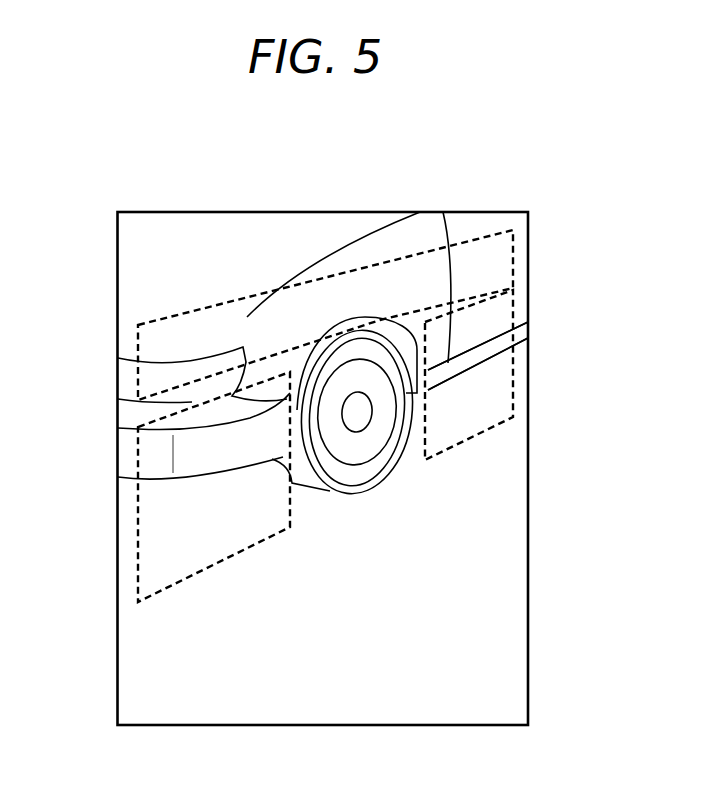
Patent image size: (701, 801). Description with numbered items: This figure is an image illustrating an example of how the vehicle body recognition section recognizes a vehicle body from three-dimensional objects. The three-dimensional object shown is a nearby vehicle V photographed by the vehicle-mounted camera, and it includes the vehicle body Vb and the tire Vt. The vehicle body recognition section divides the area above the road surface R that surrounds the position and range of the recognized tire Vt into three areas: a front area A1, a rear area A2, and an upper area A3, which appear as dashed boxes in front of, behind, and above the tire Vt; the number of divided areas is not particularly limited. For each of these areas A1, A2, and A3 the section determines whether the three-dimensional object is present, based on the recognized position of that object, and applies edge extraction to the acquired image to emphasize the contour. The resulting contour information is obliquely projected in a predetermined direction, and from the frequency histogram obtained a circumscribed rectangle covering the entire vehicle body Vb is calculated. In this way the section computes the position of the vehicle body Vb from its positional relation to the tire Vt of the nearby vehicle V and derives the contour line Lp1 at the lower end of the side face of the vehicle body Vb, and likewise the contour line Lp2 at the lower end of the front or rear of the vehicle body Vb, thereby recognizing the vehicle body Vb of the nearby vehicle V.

The nearby vehicle V is at (131, 271).
The vehicle body Vb is at (290, 231).
The tire Vt is at (365, 468).
The road surface R is at (503, 577).
The front area A1 is at (137, 578).
The rear area A2 is at (520, 368).
The upper area A3 is at (402, 257).
The contour line at a lower end of a side face of the vehicle body Lp1 is at (462, 370).
The contour line at a lower end of the front or the rear of the vehicle body Lp2 is at (138, 478).